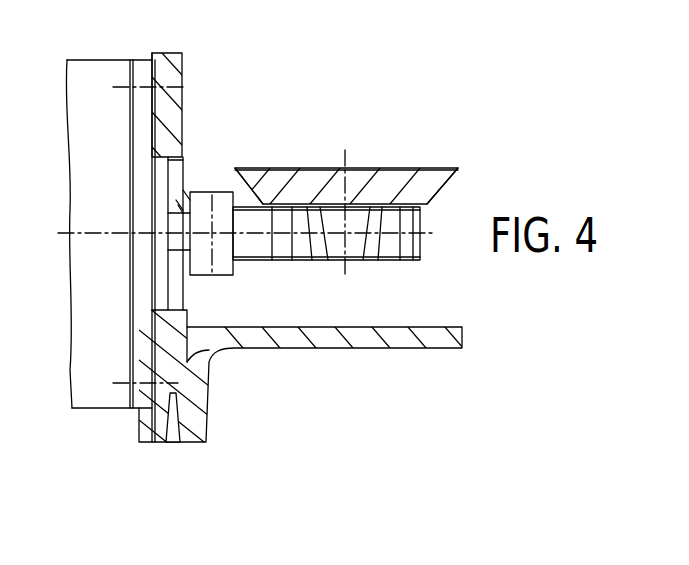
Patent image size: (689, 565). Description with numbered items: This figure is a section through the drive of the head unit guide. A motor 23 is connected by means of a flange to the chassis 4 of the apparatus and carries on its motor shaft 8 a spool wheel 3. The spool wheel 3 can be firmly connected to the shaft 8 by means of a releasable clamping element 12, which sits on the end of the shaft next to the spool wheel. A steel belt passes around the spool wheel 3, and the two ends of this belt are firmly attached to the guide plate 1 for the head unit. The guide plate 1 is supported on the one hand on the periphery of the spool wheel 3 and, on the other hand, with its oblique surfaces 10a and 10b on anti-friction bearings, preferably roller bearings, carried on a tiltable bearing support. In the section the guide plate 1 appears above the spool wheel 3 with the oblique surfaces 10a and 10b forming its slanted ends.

The guide plate 1 is at (362, 175).
The spool wheel 3 is at (253, 262).
The chassis 4 is at (235, 348).
The motor shaft 8 is at (184, 210).
The oblique surface 10a is at (430, 166).
The oblique surface 10b is at (262, 166).
The releasable clamping element 12 is at (222, 267).
The motor 23 is at (105, 393).